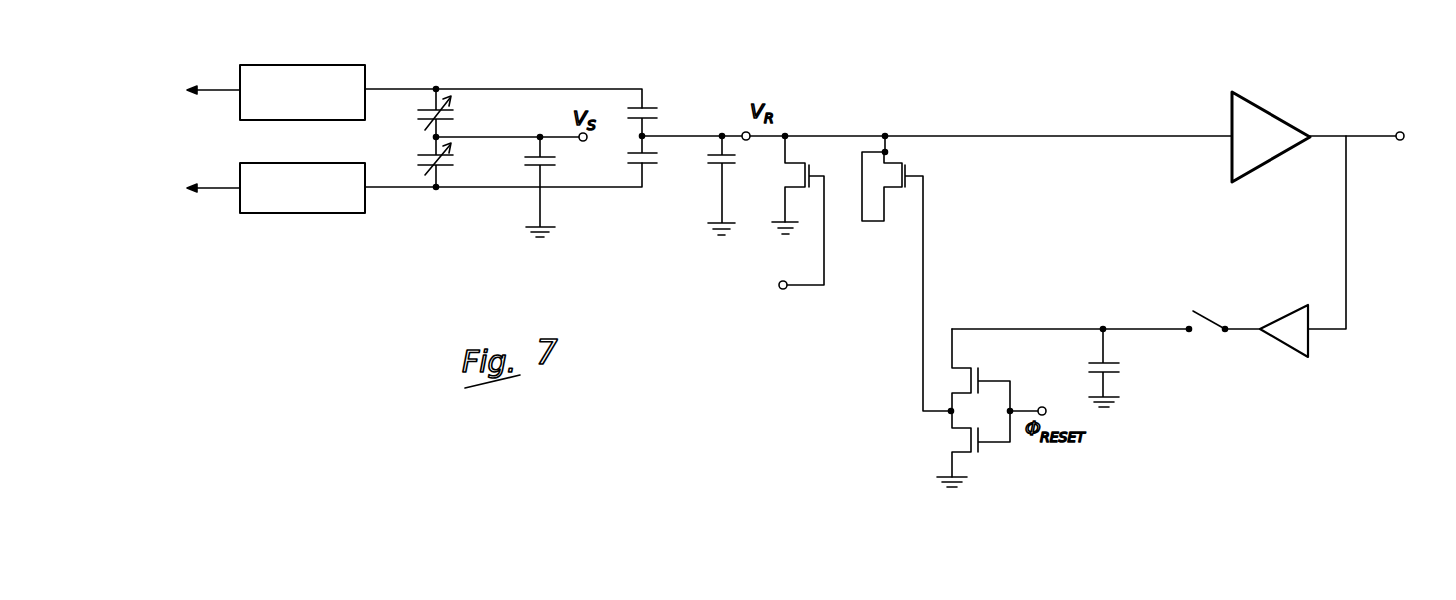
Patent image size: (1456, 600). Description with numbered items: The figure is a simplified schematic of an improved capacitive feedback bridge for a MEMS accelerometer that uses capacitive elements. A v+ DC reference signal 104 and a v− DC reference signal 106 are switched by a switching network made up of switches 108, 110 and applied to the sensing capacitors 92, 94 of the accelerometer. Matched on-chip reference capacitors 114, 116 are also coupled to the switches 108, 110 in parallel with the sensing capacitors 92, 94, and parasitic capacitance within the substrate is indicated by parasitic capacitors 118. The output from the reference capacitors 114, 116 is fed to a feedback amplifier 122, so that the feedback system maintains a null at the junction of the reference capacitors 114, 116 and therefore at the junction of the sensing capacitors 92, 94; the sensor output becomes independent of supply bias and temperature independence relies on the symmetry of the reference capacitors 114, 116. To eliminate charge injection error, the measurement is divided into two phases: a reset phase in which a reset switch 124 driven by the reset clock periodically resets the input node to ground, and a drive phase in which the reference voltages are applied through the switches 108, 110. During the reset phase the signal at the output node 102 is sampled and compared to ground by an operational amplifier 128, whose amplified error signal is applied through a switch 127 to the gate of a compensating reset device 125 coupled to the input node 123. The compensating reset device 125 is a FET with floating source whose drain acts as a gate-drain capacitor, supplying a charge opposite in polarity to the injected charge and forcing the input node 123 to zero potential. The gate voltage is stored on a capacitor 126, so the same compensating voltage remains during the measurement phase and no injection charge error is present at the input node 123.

The sensing capacitor 92 is at (424, 108).
The sensing capacitor 94 is at (418, 165).
The output node 102 is at (1402, 130).
The v+ DC reference signal 104 is at (207, 88).
The v− DC reference signal 106 is at (215, 192).
The switch 108 is at (305, 65).
The switch 110 is at (288, 213).
The reference capacitor 114 is at (634, 92).
The reference capacitor 116 is at (640, 165).
The parasitic capacitor 118 is at (530, 168).
The feedback amplifier 122 is at (1268, 108).
The input node 123 is at (929, 226).
The reset switch 124 is at (795, 158).
The compensating reset device 125 is at (893, 190).
The capacitor 126 is at (1113, 375).
The switch 127 is at (1208, 312).
The operational amplifier 128 is at (1292, 352).